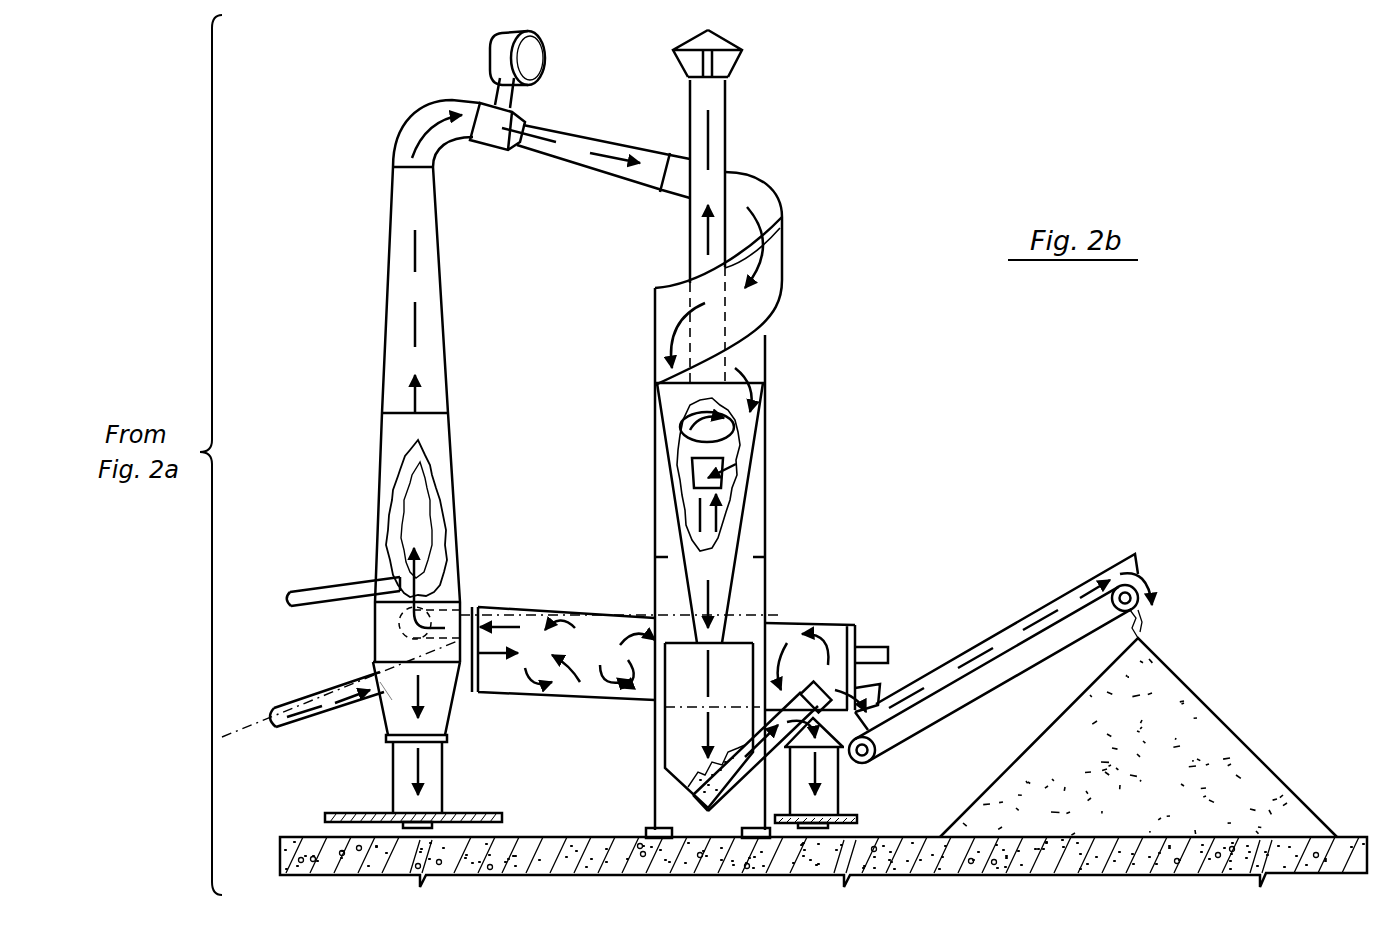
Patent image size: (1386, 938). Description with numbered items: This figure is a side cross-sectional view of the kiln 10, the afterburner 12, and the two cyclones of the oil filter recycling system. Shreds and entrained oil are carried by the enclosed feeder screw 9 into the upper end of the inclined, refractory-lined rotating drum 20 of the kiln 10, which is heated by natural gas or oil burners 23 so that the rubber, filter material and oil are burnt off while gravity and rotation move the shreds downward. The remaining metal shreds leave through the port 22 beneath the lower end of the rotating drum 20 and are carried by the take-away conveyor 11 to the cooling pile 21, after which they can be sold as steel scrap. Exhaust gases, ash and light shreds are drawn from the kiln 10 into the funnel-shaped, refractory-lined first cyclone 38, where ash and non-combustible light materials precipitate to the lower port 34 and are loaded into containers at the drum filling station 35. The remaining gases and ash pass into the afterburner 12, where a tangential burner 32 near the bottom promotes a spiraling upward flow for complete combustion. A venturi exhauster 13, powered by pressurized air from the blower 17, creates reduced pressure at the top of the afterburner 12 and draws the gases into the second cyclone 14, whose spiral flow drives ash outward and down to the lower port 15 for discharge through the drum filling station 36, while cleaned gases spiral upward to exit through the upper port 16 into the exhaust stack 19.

The feeder screw 9 is at (328, 706).
The kiln 10 is at (588, 605).
The take-away conveyor 11 is at (1068, 605).
The afterburner 12 is at (438, 445).
The exhauster 13 is at (485, 135).
The cyclone 14 is at (752, 373).
The lower port 15 is at (715, 632).
The upper port 16 is at (718, 483).
The blower 17 is at (541, 58).
The exhaust stack 19 is at (712, 97).
The rotating drum 20 is at (538, 615).
The cooling pile 21 is at (1128, 762).
The port 22 is at (875, 690).
The burners 23 is at (870, 650).
The burner 32 is at (340, 576).
The lower port 34 is at (423, 725).
The drum filling station 35 is at (422, 793).
The drum filling station 36 is at (830, 792).
The first cyclone 38 is at (397, 710).